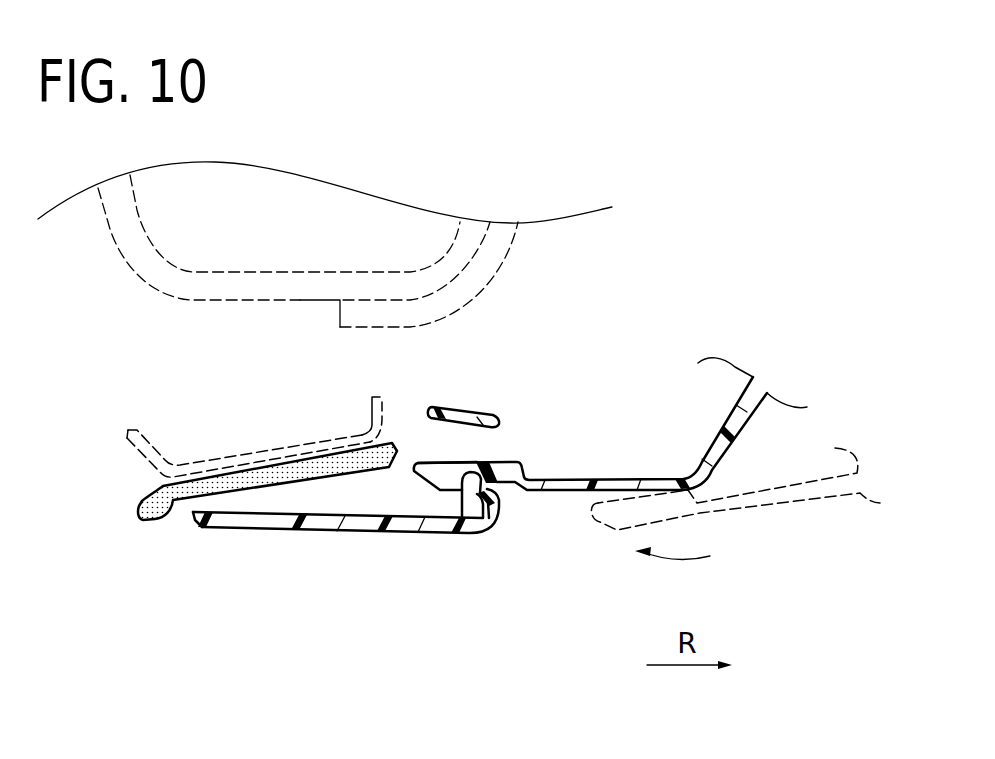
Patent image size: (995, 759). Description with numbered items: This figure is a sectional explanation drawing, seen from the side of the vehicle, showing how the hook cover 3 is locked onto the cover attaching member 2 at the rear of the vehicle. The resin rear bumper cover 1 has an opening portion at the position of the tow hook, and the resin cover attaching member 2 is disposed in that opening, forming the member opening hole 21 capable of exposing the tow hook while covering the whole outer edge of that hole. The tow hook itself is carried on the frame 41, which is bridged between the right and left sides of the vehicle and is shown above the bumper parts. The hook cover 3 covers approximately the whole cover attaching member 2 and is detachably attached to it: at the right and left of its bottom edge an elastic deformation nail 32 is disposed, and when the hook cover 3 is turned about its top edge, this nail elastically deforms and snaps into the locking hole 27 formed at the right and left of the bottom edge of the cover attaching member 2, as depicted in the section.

The rear bumper cover 1 is at (245, 497).
The cover attaching member 2 is at (308, 530).
The hook cover 3 is at (572, 493).
The member opening hole 21 is at (503, 380).
The locking hole 27 is at (430, 466).
The elastic deformation nail 32 is at (425, 472).
The frame 41 is at (322, 302).